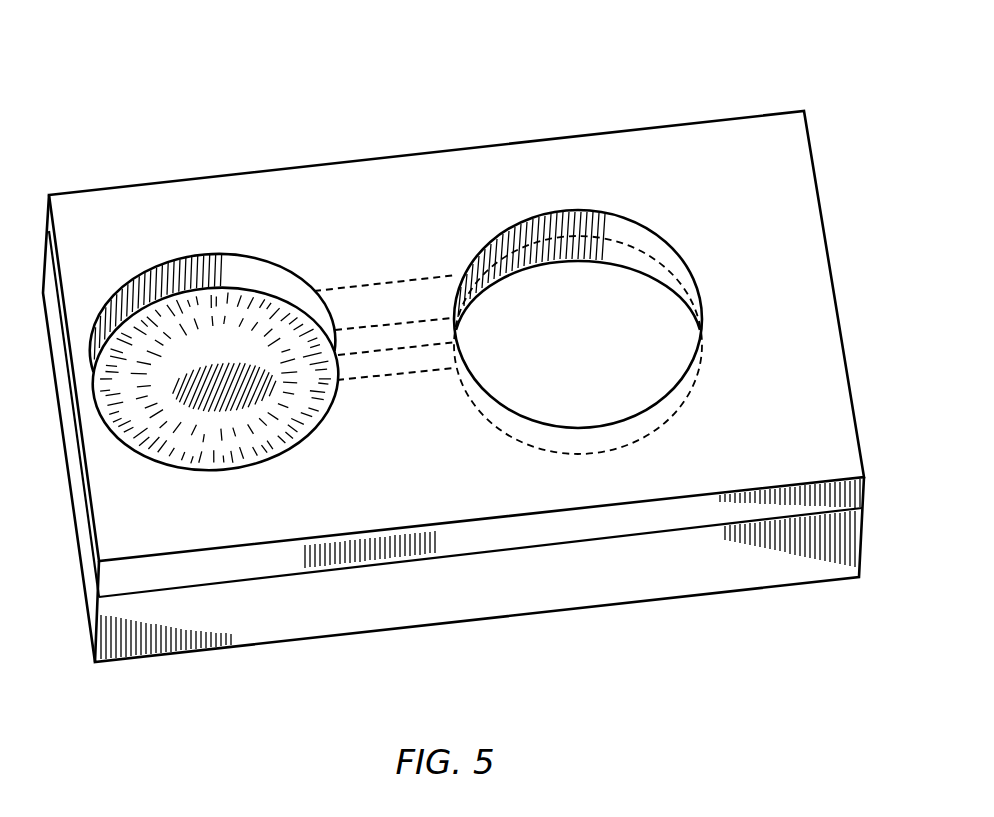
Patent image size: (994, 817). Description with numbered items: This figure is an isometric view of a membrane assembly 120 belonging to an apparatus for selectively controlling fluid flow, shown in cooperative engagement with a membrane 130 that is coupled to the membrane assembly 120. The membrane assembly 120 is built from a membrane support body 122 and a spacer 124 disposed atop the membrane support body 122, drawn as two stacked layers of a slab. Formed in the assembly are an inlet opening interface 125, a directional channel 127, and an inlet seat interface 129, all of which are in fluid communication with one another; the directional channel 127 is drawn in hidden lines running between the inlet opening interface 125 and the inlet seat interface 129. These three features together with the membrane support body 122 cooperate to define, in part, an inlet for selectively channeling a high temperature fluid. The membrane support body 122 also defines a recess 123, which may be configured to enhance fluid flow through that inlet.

The membrane assembly 120 is at (148, 56).
The membrane support body 122 is at (190, 635).
The recess 123 is at (223, 422).
The spacer 124 is at (233, 272).
The inlet opening interface 125 is at (303, 282).
The directional channel 127 is at (405, 365).
The inlet seat interface 129 is at (655, 233).
The membrane 130 is at (595, 347).